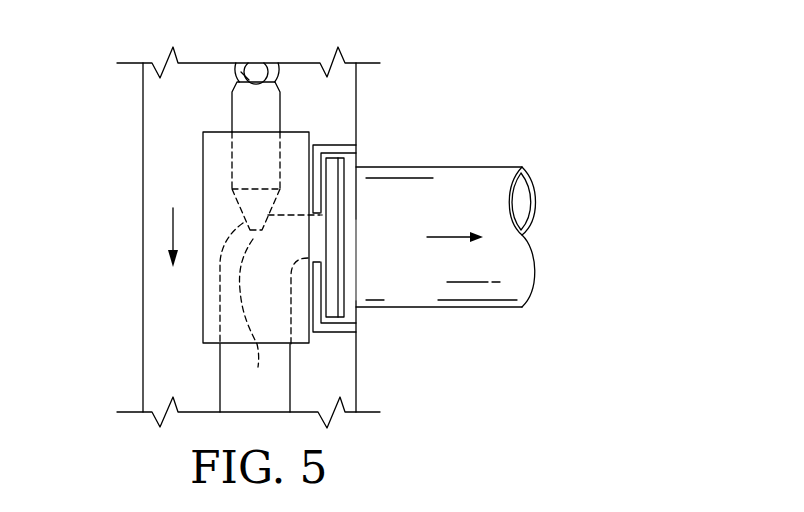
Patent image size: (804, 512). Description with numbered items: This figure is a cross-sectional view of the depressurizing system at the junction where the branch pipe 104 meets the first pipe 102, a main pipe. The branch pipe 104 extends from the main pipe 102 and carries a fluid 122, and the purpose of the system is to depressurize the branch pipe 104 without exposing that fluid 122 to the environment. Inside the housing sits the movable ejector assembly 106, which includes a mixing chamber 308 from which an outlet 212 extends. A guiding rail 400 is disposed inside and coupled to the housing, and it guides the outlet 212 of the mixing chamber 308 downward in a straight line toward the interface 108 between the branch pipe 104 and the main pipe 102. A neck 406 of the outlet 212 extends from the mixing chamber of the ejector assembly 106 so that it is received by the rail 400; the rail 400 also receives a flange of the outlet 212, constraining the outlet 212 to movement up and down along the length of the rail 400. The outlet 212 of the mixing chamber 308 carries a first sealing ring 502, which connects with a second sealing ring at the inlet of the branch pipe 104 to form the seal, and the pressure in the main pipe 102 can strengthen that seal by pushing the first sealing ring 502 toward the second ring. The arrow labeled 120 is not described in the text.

The first pipe 102 is at (143, 287).
The branch pipe 104 is at (448, 167).
The movable ejector assembly 106 is at (188, 178).
The interface 108 is at (356, 273).
The flow direction 120 is at (168, 232).
The fluid 122 is at (450, 236).
The outlet 212 is at (345, 312).
The mixing chamber 308 is at (255, 378).
The guiding rail 400 is at (337, 145).
The neck 406 is at (317, 244).
The first sealing ring 502 is at (340, 224).